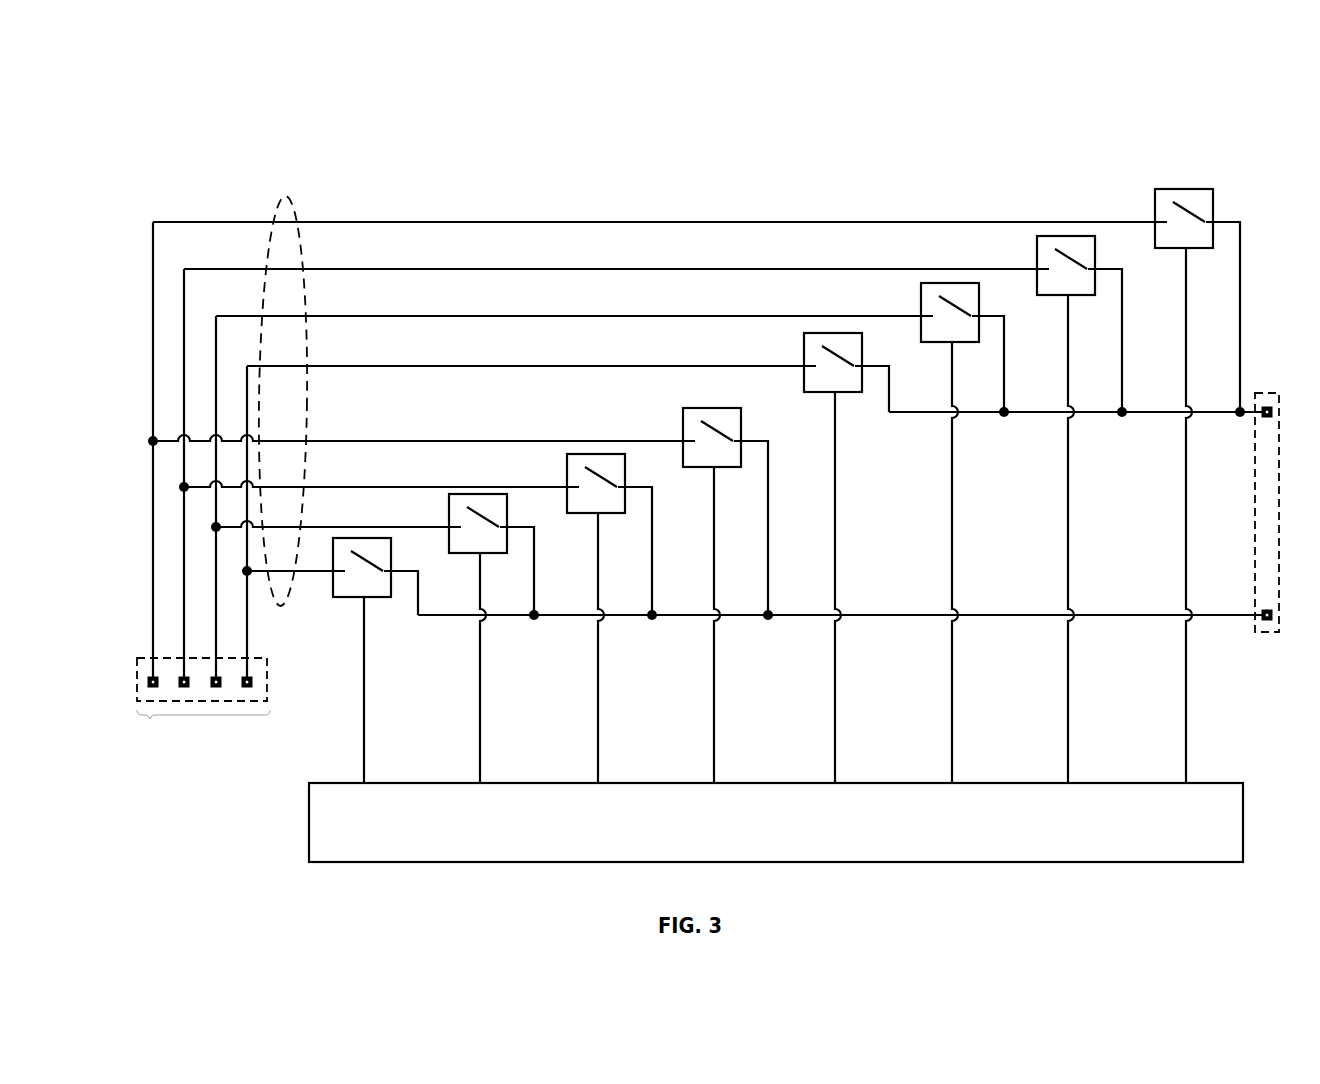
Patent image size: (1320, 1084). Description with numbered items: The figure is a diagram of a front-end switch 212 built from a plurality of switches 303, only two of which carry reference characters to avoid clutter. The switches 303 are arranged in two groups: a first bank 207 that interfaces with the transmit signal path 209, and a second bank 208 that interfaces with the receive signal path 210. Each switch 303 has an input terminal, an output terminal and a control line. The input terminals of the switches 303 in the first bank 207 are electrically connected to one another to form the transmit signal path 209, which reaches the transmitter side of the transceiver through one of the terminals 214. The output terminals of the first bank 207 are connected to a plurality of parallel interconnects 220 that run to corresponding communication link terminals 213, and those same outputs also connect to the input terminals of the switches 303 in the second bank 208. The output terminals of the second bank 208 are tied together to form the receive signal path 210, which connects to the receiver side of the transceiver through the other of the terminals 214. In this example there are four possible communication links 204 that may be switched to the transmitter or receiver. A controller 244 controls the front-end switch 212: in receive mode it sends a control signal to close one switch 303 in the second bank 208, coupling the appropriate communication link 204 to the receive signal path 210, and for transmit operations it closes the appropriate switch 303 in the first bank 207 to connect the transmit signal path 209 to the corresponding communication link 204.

The front-end switch 212 is at (685, 150).
The first bank of switches 207 is at (1224, 156).
The second bank of switches 208 is at (747, 207).
The interconnects 220 is at (287, 197).
The switch 303 is at (714, 408).
The transmit signal path 209 is at (1250, 414).
The receive signal path 210 is at (1248, 617).
The terminals 214 is at (1255, 493).
The communication link terminals 213 is at (267, 668).
The communication links 204 is at (202, 733).
The controller 244 is at (776, 822).